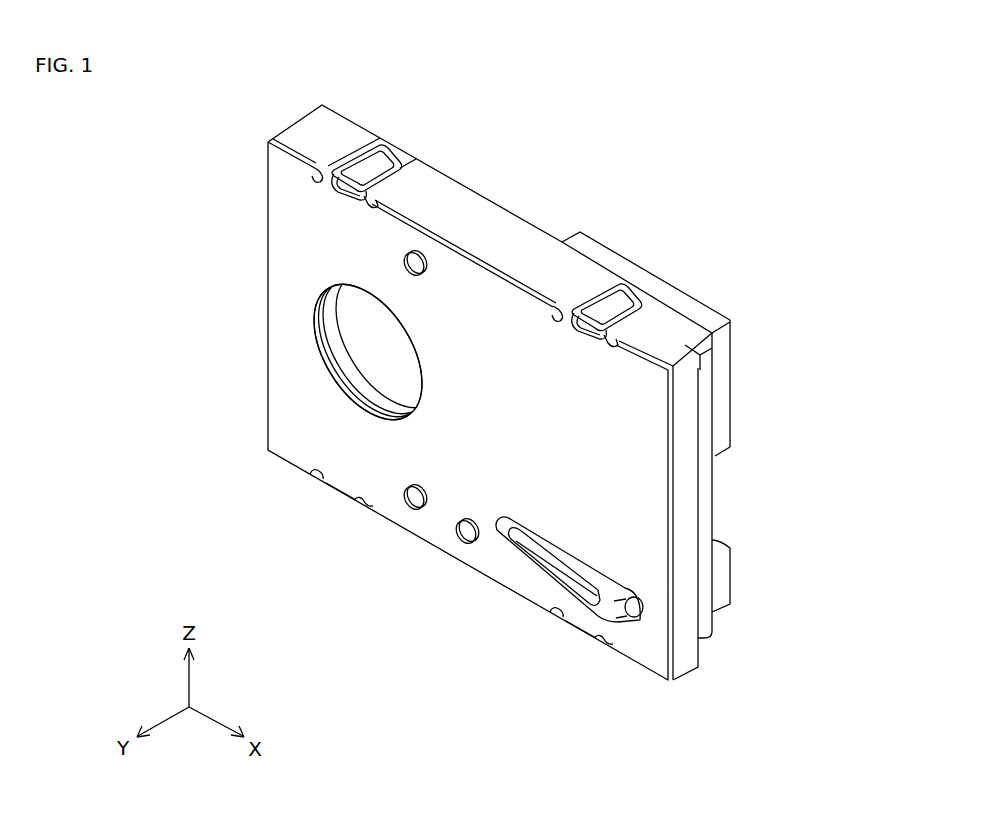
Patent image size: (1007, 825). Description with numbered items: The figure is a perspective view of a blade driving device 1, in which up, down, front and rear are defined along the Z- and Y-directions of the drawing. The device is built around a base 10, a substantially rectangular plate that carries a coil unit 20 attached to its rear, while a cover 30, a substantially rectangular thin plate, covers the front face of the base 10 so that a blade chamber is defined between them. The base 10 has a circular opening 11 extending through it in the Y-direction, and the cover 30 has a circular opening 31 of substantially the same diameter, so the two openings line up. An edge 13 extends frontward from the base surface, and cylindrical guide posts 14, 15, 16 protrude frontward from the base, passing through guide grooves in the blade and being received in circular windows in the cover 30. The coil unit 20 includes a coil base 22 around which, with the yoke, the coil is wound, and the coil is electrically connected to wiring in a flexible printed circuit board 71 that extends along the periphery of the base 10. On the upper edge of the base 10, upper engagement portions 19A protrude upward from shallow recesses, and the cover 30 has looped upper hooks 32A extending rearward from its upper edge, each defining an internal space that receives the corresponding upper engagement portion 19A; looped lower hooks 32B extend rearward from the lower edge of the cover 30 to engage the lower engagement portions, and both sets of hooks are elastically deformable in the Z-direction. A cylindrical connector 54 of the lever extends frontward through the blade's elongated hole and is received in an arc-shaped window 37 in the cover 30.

The blade driving device 1 is at (176, 412).
The base 10 is at (306, 132).
The circular opening 11 is at (368, 352).
The edge 13 is at (480, 253).
The guide post 14 is at (414, 262).
The guide post 15 is at (468, 533).
The guide post 16 is at (414, 497).
The upper engagement portion 19A is at (376, 168).
The coil unit 20 is at (760, 378).
The coil base 22 is at (696, 304).
The cover 30 is at (291, 240).
The circular opening 31 is at (372, 341).
The upper hook 32A is at (350, 146).
The lower hook 32B is at (338, 506).
The arc-shaped window 37 is at (554, 572).
The connector 54 is at (617, 617).
The flexible printed circuit board 71 is at (706, 492).